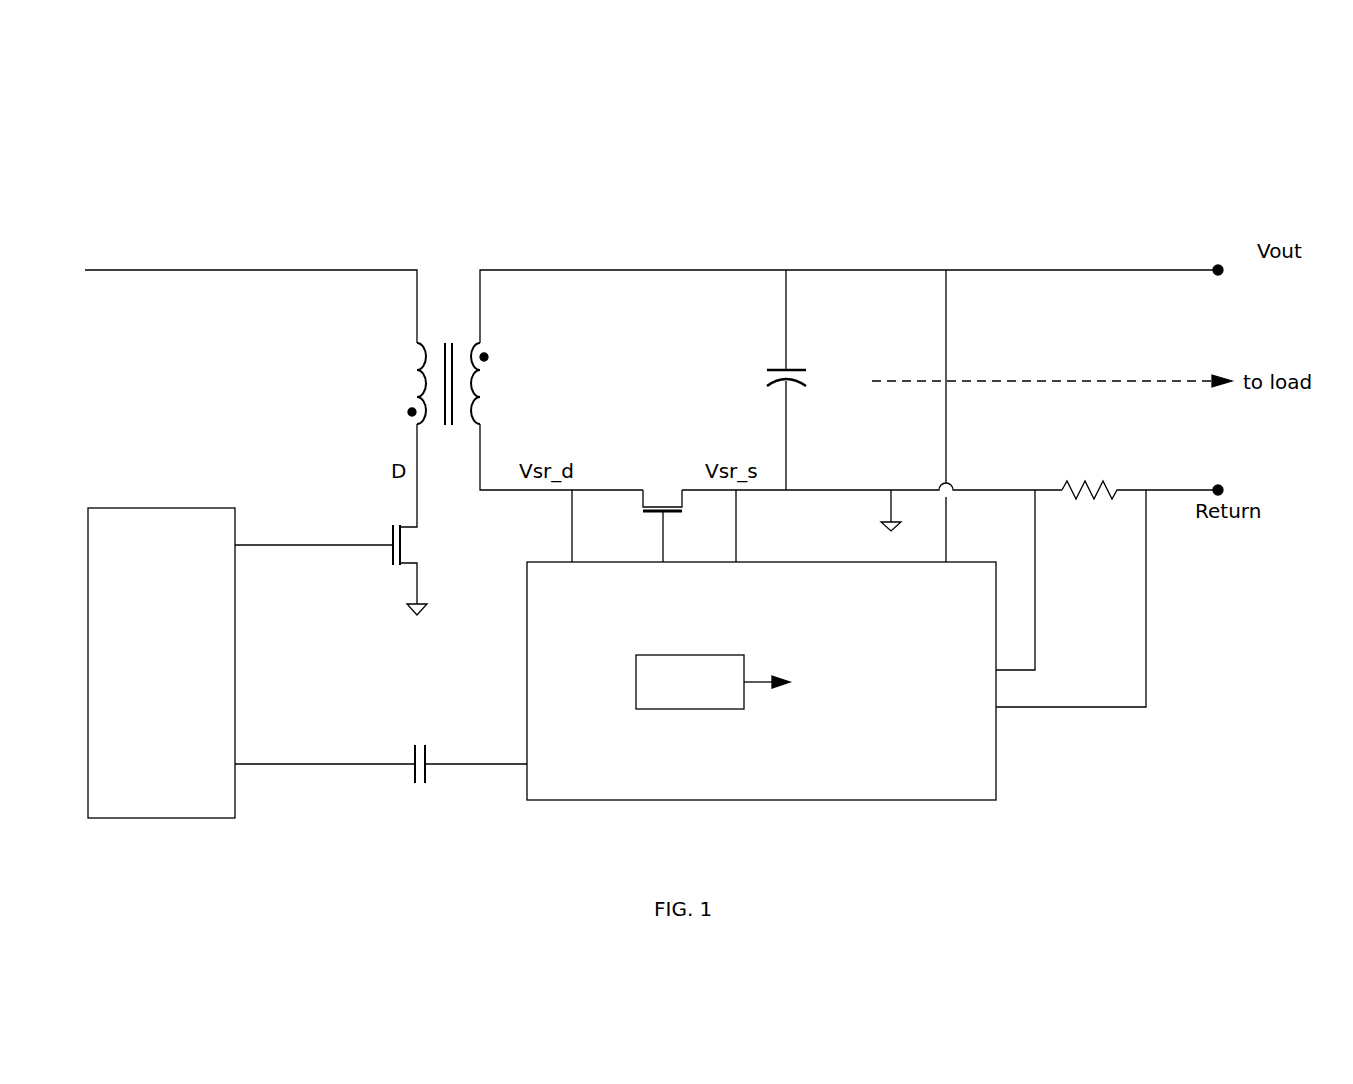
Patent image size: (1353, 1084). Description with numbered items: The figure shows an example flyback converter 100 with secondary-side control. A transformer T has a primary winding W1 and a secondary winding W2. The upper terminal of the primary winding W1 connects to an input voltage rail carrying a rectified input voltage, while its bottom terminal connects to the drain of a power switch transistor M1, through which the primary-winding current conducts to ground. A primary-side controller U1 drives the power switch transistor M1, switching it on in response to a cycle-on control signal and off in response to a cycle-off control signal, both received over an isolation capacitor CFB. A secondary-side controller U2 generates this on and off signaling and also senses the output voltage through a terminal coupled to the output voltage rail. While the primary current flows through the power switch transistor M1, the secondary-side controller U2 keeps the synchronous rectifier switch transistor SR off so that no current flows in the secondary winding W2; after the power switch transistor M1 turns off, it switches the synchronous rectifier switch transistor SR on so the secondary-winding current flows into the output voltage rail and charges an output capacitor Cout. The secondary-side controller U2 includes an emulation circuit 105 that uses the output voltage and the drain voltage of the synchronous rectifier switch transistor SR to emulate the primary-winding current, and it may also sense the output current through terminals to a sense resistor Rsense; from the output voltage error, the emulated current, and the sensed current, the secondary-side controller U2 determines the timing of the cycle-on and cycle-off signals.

The flyback converter 100 is at (388, 138).
The emulation circuit 105 is at (708, 710).
The primary-side controller U1 is at (161, 663).
The secondary-side controller U2 is at (761, 681).
The power switch transistor M1 is at (422, 519).
The transformer T is at (444, 341).
The primary winding W1 is at (396, 383).
The secondary winding W2 is at (497, 383).
The synchronous rectifier switch transistor SR is at (662, 509).
The output capacitor Cout is at (757, 380).
The isolation capacitor CFB is at (381, 779).
The sense resistor Rsense is at (1136, 471).